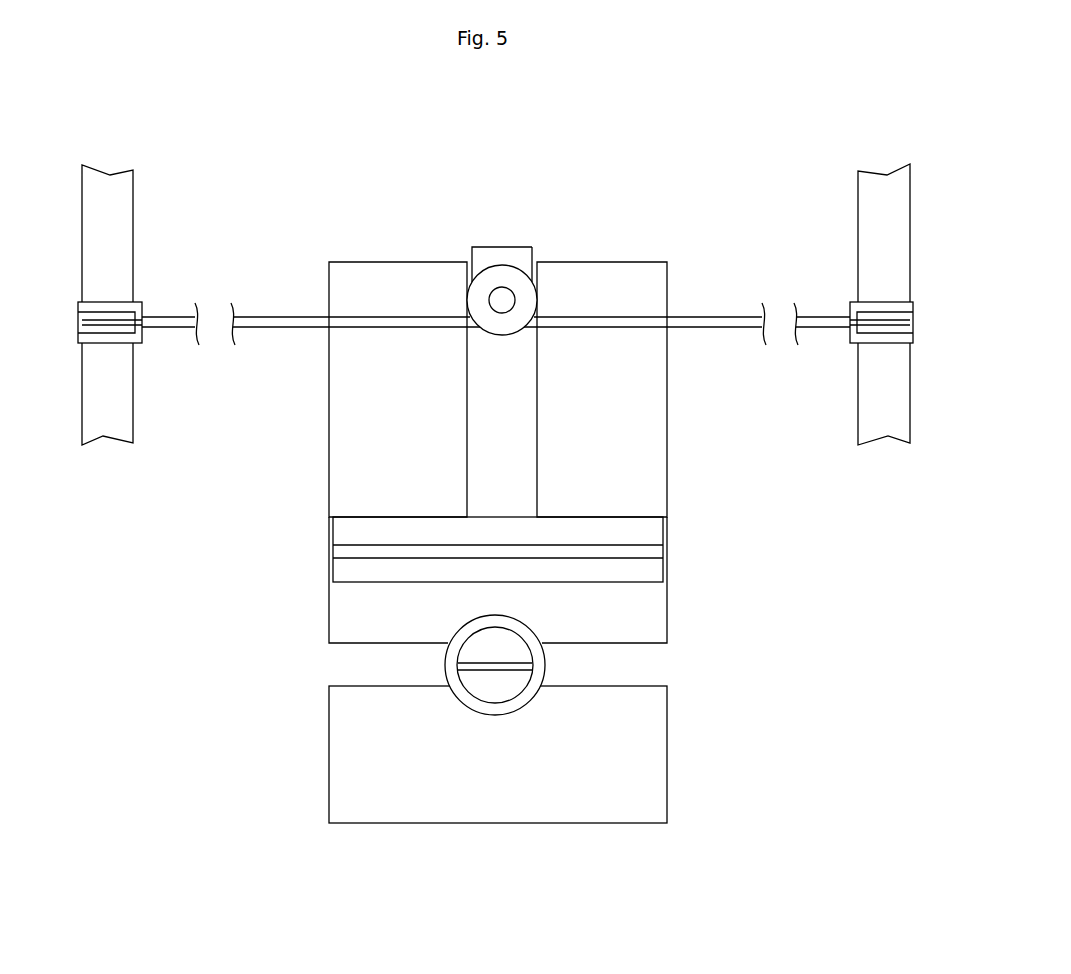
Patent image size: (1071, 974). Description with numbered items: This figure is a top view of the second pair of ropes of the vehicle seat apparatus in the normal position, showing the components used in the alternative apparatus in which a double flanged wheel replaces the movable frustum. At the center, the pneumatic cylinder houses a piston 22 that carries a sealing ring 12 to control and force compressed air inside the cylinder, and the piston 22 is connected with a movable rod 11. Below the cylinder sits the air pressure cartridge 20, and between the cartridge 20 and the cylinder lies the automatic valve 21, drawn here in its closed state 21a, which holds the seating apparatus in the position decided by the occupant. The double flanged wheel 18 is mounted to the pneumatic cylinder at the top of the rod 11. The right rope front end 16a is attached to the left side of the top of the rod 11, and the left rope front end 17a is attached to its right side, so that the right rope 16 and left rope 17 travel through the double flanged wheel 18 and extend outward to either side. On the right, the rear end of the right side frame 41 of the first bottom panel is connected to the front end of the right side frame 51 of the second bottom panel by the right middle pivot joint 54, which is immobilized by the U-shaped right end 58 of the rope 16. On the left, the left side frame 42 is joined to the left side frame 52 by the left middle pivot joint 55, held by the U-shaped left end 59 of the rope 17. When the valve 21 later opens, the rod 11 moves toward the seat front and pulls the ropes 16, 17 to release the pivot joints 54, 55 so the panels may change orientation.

The rod 11 is at (540, 448).
The sealing ring 12 is at (652, 550).
The right rope part 16 is at (693, 333).
The right rope front end 16a is at (467, 257).
The left rope part 17 is at (163, 323).
The left rope front end 17a is at (533, 257).
The double flanged wheel 18 is at (494, 272).
The air pressure cartridge 20 is at (578, 755).
The automatic valve 21 is at (543, 670).
The automatic valve closed state 21a is at (487, 670).
The piston 22 is at (347, 531).
The right side frame 41 is at (883, 233).
The left side frame 42 is at (127, 217).
The right side frame 51 is at (870, 387).
The left side frame 52 is at (125, 382).
The right middle pivot joint 54 is at (910, 318).
The left middle pivot joint 55 is at (82, 327).
The U-shaped right end 58 is at (853, 307).
The U-shaped left end 59 is at (138, 307).